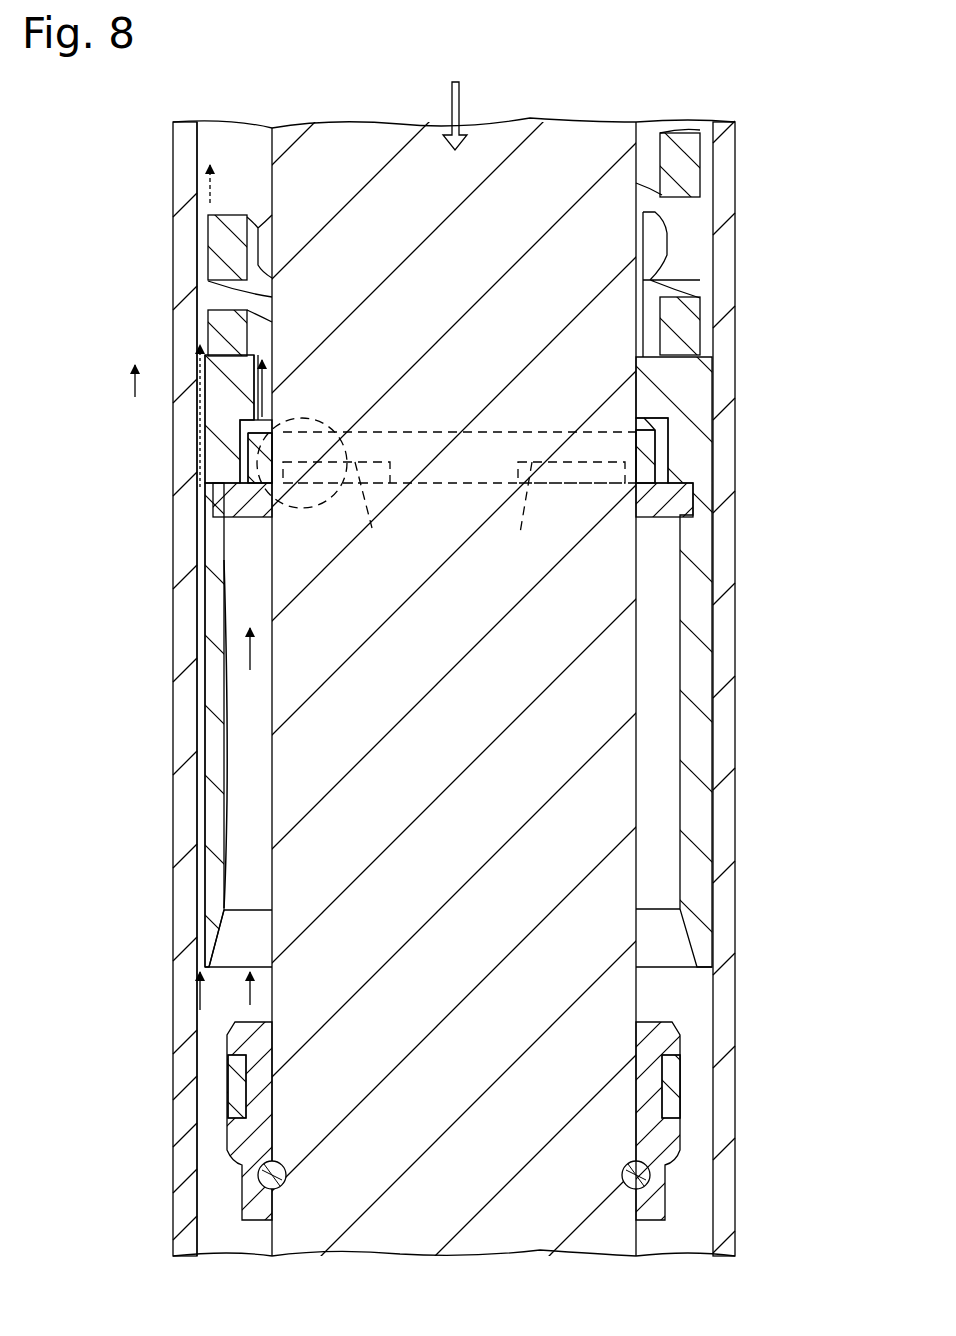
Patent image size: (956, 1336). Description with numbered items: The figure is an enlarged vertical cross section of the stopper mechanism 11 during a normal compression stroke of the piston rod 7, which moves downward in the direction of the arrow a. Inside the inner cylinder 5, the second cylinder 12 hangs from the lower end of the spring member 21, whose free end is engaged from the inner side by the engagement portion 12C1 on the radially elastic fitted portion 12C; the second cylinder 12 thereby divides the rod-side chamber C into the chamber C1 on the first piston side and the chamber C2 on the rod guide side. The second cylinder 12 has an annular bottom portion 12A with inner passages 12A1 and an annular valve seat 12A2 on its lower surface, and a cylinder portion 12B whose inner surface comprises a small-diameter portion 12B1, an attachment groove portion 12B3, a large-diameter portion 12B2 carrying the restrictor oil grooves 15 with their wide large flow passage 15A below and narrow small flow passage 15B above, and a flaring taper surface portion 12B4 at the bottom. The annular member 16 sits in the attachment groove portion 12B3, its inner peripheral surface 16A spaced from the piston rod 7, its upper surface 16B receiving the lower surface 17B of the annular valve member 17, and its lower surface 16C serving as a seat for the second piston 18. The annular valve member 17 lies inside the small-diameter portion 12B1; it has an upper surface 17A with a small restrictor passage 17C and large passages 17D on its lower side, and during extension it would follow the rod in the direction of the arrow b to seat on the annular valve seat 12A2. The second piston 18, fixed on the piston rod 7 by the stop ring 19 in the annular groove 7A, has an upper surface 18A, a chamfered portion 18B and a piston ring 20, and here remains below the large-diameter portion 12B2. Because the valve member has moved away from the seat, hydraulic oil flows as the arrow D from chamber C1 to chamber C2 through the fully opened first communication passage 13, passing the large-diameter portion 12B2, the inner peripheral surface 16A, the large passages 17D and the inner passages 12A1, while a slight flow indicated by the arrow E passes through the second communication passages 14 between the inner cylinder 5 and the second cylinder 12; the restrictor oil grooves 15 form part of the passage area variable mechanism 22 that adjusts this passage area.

The inner cylinder 5 is at (702, 655).
The piston rod 7 is at (605, 765).
The annular groove 7A is at (650, 1180).
The stopper mechanism 11 is at (730, 603).
The second cylinder 12 is at (215, 740).
The bottom portion 12A is at (650, 381).
The inner passages 12A1 is at (248, 428).
The annular valve seat 12A2 is at (660, 432).
The cylinder portion 12B is at (690, 720).
The small-diameter portion 12B1 is at (232, 466).
The large-diameter portion 12B2 is at (668, 855).
The attachment groove portion 12B3 is at (693, 492).
The taper surface portion 12B4 is at (660, 940).
The fitted portion 12C is at (650, 281).
The engagement portion 12C1 is at (660, 233).
The first communication passage 13 is at (220, 548).
The second communication passages 14 is at (205, 655).
The restrictor oil grooves 15 is at (222, 862).
The large flow passage 15A is at (213, 948).
The small flow passage 15B is at (225, 610).
The annular member 16 is at (232, 517).
The inner peripheral surface 16A is at (265, 517).
The upper surface 16B is at (228, 497).
The lower surface 16C is at (665, 518).
The annular valve member 17 is at (652, 457).
The upper surface 17A is at (258, 403).
The lower surface 17B is at (637, 487).
The restrictor passage 17C is at (243, 466).
The large passages 17D is at (525, 535).
The second piston 18 is at (660, 1140).
The upper surface 18A is at (235, 1025).
The chamfered portion 18B is at (670, 1028).
The stop ring 19 is at (263, 1183).
The piston ring 20 is at (237, 1100).
The spring member 21 is at (683, 168).
The passage area variable mechanism 22 is at (220, 787).
The rod-side chamber C is at (663, 1083).
The chamber on the first piston side C1 is at (688, 997).
The chamber on the rod guide side C2 is at (692, 245).
The arrow D is at (290, 425).
The arrow E is at (198, 345).
The arrow a is at (464, 116).
The arrow b is at (122, 383).